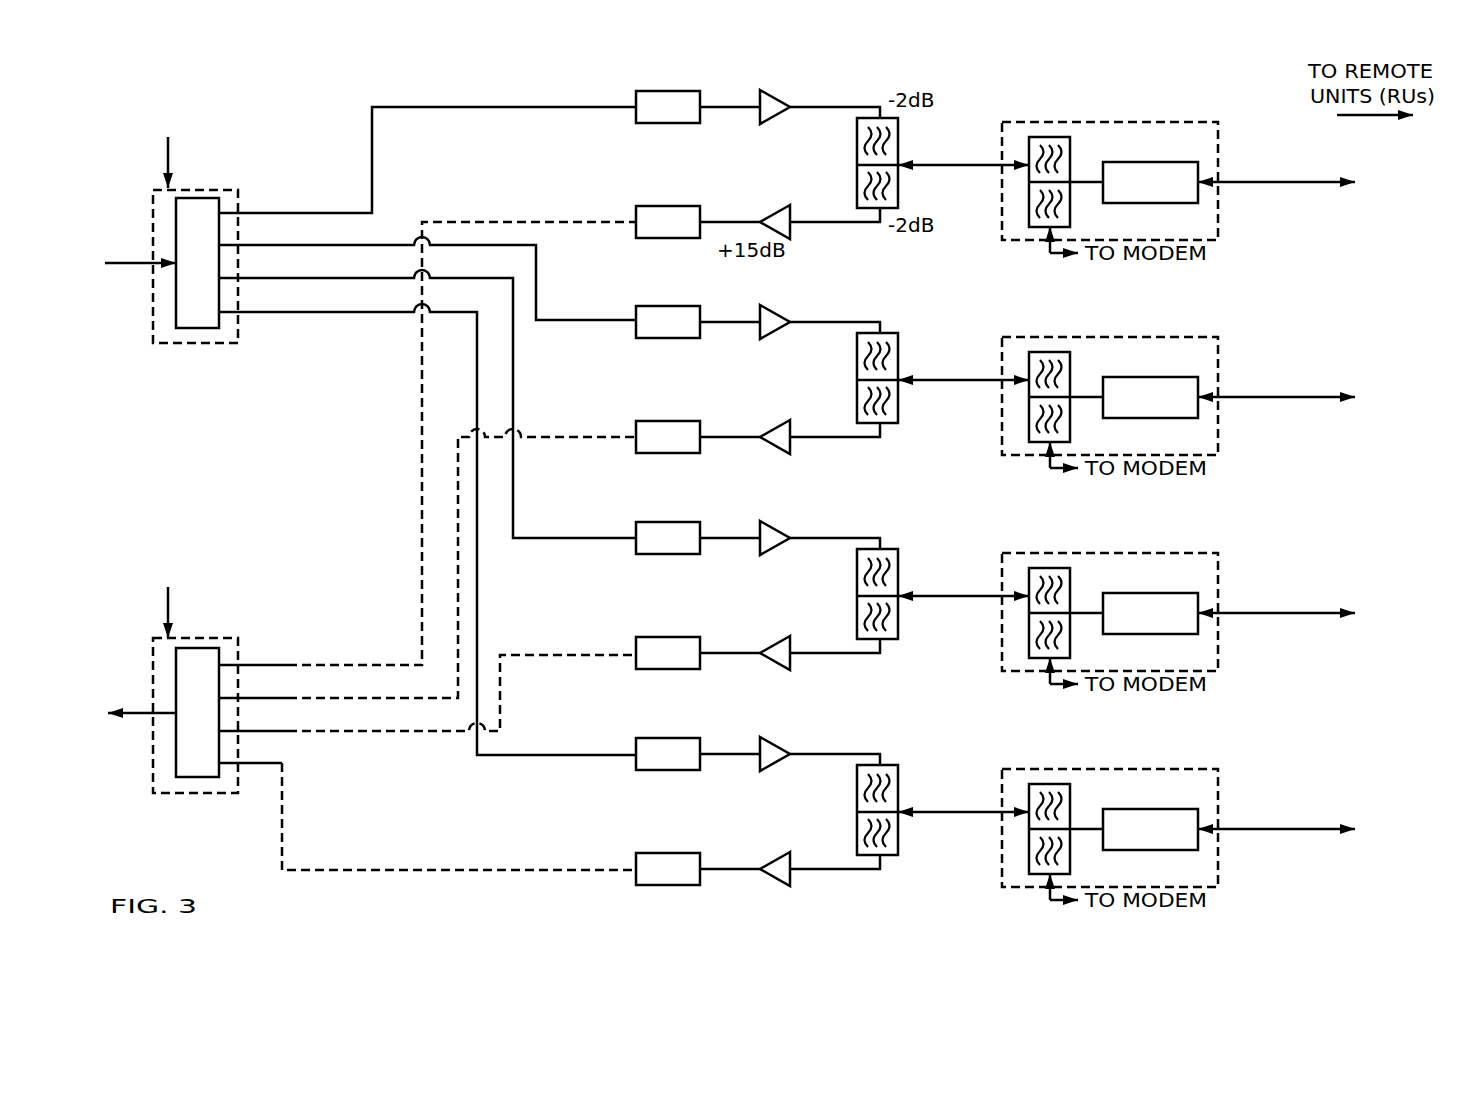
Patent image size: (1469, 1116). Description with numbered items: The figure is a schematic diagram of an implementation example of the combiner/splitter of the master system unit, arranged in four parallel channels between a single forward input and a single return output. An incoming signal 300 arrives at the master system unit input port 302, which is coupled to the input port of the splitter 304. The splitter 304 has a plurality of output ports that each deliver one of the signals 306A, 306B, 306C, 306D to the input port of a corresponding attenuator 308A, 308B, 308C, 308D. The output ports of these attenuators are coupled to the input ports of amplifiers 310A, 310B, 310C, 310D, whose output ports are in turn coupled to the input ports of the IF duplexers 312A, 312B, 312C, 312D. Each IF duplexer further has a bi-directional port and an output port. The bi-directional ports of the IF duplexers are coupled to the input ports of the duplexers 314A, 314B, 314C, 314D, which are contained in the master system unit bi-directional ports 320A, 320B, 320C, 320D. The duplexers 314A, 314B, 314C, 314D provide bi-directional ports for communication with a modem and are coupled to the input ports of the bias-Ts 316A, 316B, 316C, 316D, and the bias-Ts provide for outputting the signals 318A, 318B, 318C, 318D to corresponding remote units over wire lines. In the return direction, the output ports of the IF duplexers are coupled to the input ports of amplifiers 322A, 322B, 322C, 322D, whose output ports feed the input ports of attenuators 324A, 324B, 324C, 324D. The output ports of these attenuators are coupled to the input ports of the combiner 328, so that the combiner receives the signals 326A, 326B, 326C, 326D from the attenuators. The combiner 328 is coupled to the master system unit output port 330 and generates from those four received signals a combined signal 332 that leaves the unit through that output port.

The master system unit input signal 300 is at (123, 263).
The master system unit input port 302 is at (229, 137).
The splitter 304 is at (197, 329).
The signal 306A is at (434, 108).
The signal 306B is at (538, 264).
The signal 306C is at (514, 381).
The signal 306D is at (345, 316).
The attenuator 308A is at (636, 122).
The attenuator 308B is at (632, 319).
The attenuator 308C is at (632, 535).
The attenuator 308D is at (632, 751).
The amplifier 310A is at (760, 123).
The amplifier 310B is at (772, 323).
The amplifier 310C is at (772, 539).
The amplifier 310D is at (772, 755).
The IF duplexer 312A is at (899, 184).
The IF duplexer 312B is at (851, 378).
The IF duplexer 312C is at (851, 594).
The IF duplexer 312D is at (852, 810).
The duplexer 314A is at (1072, 218).
The duplexer 314B is at (1089, 397).
The duplexer 314C is at (1089, 613).
The duplexer 314D is at (1090, 829).
The bias-T 316A is at (1132, 162).
The bias-T 316B is at (1154, 379).
The bias-T 316C is at (1154, 595).
The bias-T 316D is at (1155, 811).
The signal 318A is at (1263, 186).
The signal 318B is at (1276, 405).
The signal 318C is at (1276, 621).
The signal 318D is at (1276, 837).
The master system unit bi-directional port 320A is at (1219, 131).
The master system unit bi-directional port 320B is at (1141, 371).
The master system unit bi-directional port 320C is at (1141, 587).
The master system unit bi-directional port 320D is at (1142, 803).
The amplifier 322A is at (777, 206).
The amplifier 322B is at (746, 426).
The amplifier 322C is at (746, 642).
The amplifier 322D is at (746, 858).
The attenuator 324A is at (636, 207).
The attenuator 324B is at (632, 424).
The attenuator 324C is at (632, 640).
The attenuator 324D is at (632, 856).
The signal 326A is at (352, 663).
The signal 326B is at (460, 606).
The signal 326C is at (355, 734).
The signal 326D is at (359, 866).
The combiner 328 is at (197, 778).
The master system unit output port 330 is at (229, 589).
The combined signal 332 is at (127, 712).